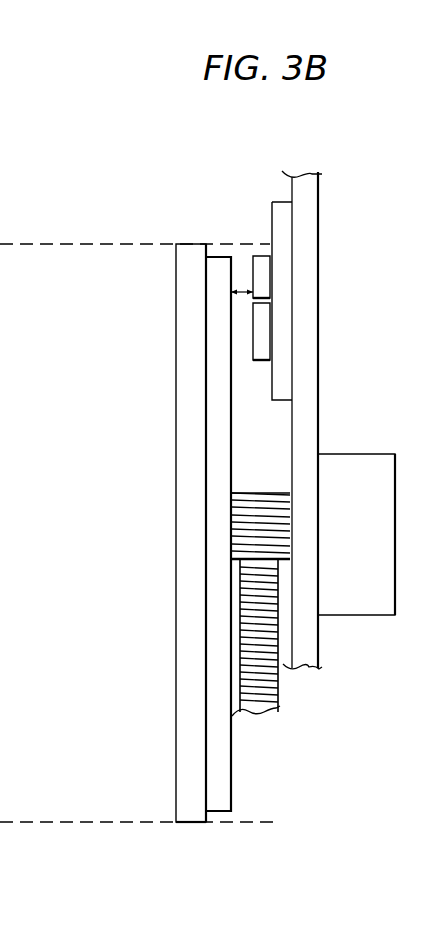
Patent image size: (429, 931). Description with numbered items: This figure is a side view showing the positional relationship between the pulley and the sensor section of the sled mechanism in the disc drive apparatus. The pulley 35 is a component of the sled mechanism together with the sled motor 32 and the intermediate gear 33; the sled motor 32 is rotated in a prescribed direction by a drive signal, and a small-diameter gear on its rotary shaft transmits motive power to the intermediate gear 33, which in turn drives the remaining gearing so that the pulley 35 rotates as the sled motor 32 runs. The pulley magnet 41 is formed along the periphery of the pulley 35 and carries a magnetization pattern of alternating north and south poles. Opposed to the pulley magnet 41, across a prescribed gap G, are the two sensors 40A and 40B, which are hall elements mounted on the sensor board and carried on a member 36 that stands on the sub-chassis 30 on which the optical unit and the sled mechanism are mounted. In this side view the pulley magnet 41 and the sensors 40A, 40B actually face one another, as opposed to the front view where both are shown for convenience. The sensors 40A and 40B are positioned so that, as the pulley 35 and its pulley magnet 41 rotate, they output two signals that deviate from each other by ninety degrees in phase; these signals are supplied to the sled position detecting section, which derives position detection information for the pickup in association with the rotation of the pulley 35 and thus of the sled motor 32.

The sub-chassis 30 is at (320, 228).
The sled motor 32 is at (354, 453).
The intermediate gear 33 is at (280, 689).
The pulley 35 is at (172, 762).
The slider 36 is at (280, 202).
The sensor 40A is at (261, 254).
The sensor 40B is at (265, 362).
The pulley magnet 41 is at (233, 760).
The gap G is at (241, 292).